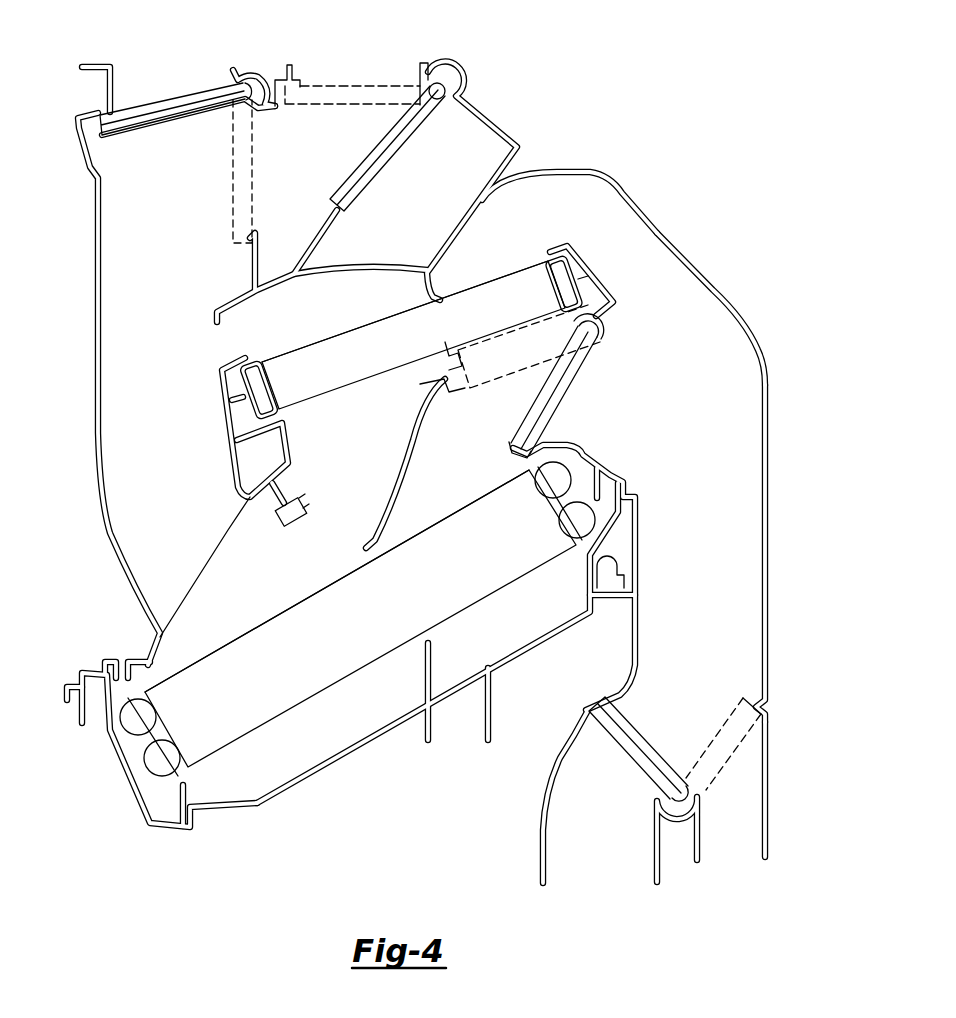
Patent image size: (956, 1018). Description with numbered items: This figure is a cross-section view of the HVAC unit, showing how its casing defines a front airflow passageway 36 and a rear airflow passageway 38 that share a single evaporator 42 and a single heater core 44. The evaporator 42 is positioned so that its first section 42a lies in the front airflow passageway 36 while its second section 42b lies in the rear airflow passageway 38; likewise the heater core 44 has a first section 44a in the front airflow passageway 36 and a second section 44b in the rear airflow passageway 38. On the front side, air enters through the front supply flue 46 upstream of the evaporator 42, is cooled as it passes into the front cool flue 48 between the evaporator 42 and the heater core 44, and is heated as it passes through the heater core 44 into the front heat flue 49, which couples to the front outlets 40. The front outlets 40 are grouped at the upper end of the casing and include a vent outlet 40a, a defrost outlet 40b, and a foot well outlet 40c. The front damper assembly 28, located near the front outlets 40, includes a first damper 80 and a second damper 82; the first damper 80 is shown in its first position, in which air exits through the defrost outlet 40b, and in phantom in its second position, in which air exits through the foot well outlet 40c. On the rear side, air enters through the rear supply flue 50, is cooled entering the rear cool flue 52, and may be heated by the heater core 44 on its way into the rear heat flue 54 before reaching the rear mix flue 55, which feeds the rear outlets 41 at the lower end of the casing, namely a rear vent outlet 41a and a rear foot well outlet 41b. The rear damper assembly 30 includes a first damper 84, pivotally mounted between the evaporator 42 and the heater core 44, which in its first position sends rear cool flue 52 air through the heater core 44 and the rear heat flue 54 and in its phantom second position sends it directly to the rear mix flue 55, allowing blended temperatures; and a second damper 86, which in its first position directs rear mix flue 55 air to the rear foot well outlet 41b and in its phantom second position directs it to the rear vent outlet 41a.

The front damper assembly 28 is at (178, 84).
The rear damper assembly 30 is at (630, 704).
The front airflow passageway 36 is at (128, 563).
The rear airflow passageway 38 is at (698, 272).
The front outlets 40 is at (348, 77).
The vent outlet 40a is at (133, 90).
The defrost outlet 40b is at (313, 77).
The foot well outlet 40c is at (470, 152).
The rear outlets 41 is at (620, 864).
The rear vent outlet 41a is at (585, 858).
The rear foot well outlet 41b is at (750, 842).
The evaporator 42 is at (357, 619).
The first section of evaporator 42a is at (250, 628).
The second section of evaporator 42b is at (463, 498).
The heater core 44 is at (417, 365).
The first section of heater core 44a is at (337, 338).
The second section of heater core 44b is at (521, 268).
The front supply flue 46 is at (315, 742).
The front cool flue 48 is at (220, 563).
The front heat flue 49 is at (272, 332).
The rear supply flue 50 is at (522, 617).
The rear cool flue 52 is at (487, 410).
The rear heat flue 54 is at (550, 188).
The rear mix flue 55 is at (723, 412).
The first damper 80 is at (385, 142).
The second damper 82 is at (185, 115).
The first damper 84 is at (497, 377).
The second damper 86 is at (660, 762).